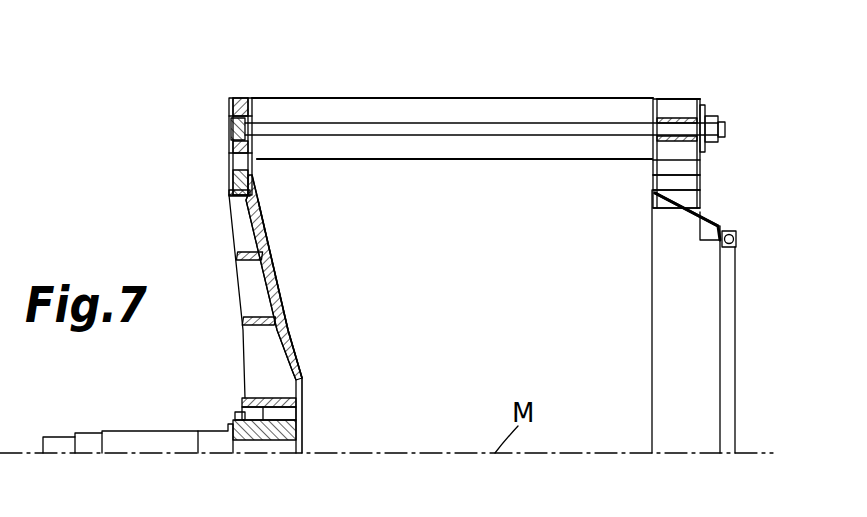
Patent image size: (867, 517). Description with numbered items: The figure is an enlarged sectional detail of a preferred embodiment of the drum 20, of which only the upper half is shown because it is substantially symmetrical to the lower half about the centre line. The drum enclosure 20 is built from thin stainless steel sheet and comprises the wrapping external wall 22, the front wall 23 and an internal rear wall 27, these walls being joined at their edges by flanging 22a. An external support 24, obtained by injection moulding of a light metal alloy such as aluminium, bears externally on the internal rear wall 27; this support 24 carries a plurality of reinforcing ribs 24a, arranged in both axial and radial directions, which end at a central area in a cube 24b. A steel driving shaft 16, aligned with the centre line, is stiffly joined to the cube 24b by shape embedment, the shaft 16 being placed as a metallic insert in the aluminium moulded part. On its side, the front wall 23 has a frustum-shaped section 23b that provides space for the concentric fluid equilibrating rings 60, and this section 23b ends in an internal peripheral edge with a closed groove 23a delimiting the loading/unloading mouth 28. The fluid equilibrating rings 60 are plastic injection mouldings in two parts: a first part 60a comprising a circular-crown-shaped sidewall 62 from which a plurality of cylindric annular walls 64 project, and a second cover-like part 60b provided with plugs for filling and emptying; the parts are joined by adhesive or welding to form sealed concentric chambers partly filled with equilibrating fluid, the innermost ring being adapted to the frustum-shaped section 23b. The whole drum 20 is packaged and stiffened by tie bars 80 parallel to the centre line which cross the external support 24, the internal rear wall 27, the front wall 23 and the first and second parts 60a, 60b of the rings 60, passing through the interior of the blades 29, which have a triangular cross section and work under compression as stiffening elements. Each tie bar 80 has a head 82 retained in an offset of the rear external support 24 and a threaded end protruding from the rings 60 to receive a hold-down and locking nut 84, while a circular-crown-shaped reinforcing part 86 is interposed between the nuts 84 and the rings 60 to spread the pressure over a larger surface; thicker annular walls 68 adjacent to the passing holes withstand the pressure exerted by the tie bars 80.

The driving shaft 16 is at (168, 445).
The drum 20 is at (490, 92).
The wrapping external wall 22 is at (365, 98).
The flanging 22a is at (240, 98).
The front wall 23 is at (645, 148).
The closed groove 23a is at (736, 243).
The frustum-shaped section 23b is at (700, 212).
The external support 24 is at (233, 225).
The reinforcing ribs 24a is at (250, 288).
The cube 24b is at (263, 402).
The internal rear wall 27 is at (297, 328).
The loading/unloading mouth 28 is at (690, 383).
The blades 29 is at (390, 148).
The fluid equilibrating rings 60 is at (712, 187).
The first part 60a is at (662, 217).
The second cover-like part 60b is at (700, 203).
The circular-crown-shaped sidewall 62 is at (650, 178).
The cylindric annular walls 64 is at (652, 208).
The thicker annular walls 68 is at (690, 99).
The tie bars 80 is at (418, 130).
The head 82 is at (233, 128).
The hold-down and locking nut 84 is at (722, 125).
The circular-crown-shaped reinforcing part 86 is at (703, 108).